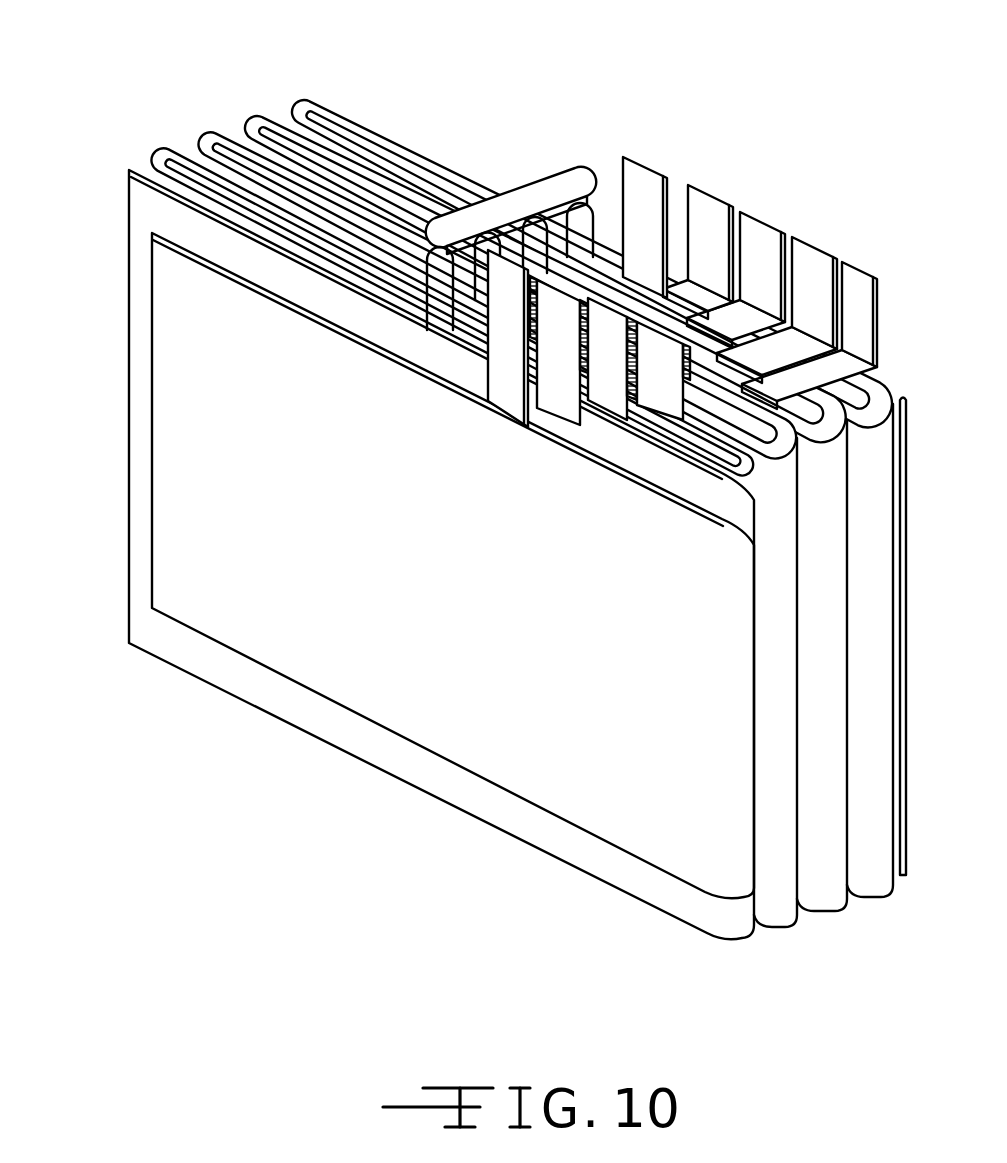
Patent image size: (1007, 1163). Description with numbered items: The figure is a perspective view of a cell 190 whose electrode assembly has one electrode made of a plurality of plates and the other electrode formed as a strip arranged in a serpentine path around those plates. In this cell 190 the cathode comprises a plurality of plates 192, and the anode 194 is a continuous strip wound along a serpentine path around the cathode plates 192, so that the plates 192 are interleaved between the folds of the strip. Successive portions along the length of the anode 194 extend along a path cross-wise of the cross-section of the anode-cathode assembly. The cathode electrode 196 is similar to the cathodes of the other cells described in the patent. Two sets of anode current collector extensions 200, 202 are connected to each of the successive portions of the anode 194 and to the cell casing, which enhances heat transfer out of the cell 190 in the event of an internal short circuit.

The cell 190 is at (469, 474).
The plates 192 is at (212, 168).
The anode 194 is at (128, 427).
The cathode electrode 196 is at (498, 182).
The anode current collector extensions 200 is at (612, 357).
The anode current collector extensions 202 is at (887, 280).